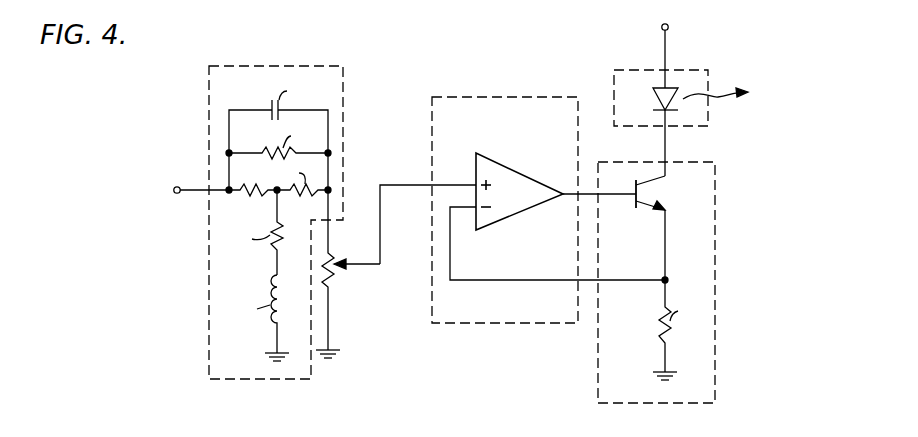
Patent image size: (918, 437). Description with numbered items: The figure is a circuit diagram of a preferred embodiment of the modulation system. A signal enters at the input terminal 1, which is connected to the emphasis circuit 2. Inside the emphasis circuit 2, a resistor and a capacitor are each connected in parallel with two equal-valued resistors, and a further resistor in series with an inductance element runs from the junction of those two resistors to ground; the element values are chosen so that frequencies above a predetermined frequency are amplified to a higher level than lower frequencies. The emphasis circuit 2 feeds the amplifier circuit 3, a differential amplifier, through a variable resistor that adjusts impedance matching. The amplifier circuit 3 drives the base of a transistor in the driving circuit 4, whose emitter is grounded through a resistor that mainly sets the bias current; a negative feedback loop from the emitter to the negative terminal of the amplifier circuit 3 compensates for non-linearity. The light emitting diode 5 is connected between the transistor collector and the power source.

The input terminal 1 is at (181, 186).
The emphasis circuit 2 is at (330, 66).
The amplifier circuit 3 is at (545, 97).
The driving circuit 4 is at (703, 162).
The light emitting diode 5 is at (686, 70).